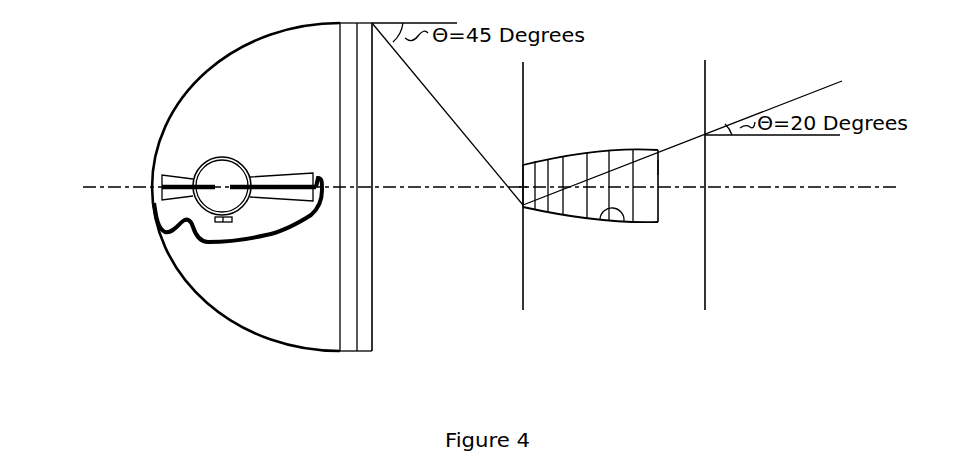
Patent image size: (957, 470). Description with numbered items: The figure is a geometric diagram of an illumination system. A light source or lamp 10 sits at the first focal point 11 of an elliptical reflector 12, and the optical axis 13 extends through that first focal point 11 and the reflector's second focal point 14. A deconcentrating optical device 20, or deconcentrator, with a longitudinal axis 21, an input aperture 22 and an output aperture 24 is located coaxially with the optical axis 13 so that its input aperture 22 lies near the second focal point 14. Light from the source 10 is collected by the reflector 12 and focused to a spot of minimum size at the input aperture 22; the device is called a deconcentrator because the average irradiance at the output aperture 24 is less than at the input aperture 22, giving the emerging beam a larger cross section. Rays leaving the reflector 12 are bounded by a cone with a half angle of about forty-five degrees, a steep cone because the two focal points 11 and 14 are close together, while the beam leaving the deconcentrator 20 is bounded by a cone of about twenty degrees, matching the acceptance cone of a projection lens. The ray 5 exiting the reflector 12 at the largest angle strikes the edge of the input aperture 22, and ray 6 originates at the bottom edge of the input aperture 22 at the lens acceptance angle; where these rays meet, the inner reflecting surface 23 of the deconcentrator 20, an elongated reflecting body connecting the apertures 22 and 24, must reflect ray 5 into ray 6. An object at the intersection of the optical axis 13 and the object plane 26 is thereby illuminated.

The ray 5 is at (428, 92).
The ray 6 is at (802, 95).
The light source 10 is at (234, 215).
The first focal point 11 is at (222, 187).
The elliptical reflector 12 is at (160, 238).
The optical axis 13 is at (122, 187).
The second focal point 14 is at (522, 187).
The deconcentrating optical device 20 is at (598, 148).
The longitudinal axis 21 is at (656, 190).
The input aperture 22 is at (518, 175).
The inner reflecting surface 23 is at (622, 222).
The output aperture 24 is at (663, 168).
The object plane 26 is at (705, 83).